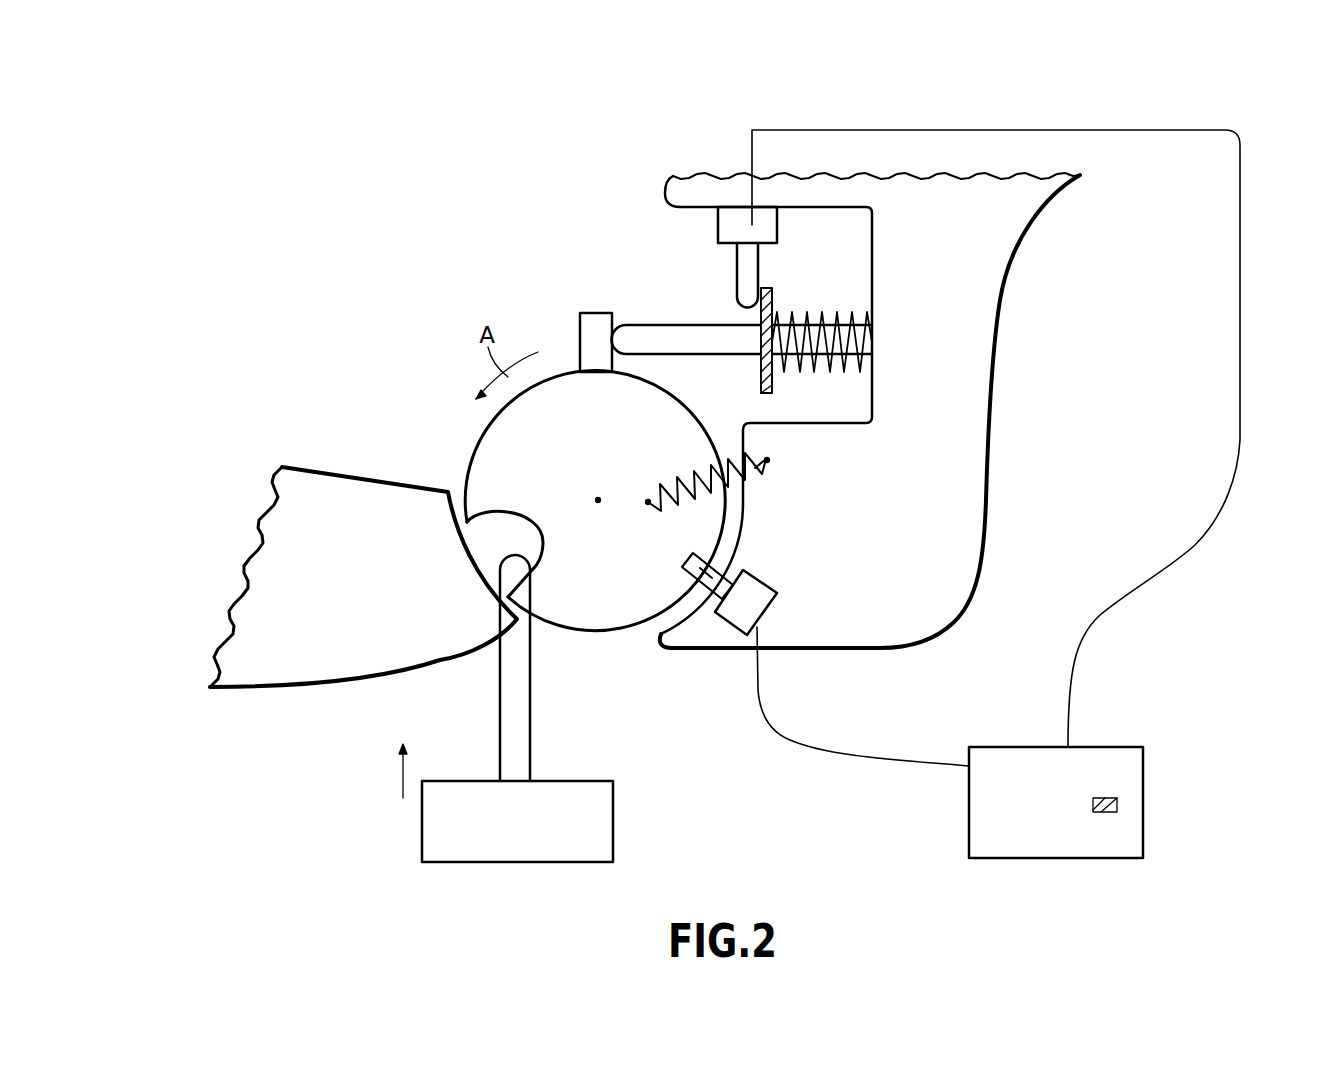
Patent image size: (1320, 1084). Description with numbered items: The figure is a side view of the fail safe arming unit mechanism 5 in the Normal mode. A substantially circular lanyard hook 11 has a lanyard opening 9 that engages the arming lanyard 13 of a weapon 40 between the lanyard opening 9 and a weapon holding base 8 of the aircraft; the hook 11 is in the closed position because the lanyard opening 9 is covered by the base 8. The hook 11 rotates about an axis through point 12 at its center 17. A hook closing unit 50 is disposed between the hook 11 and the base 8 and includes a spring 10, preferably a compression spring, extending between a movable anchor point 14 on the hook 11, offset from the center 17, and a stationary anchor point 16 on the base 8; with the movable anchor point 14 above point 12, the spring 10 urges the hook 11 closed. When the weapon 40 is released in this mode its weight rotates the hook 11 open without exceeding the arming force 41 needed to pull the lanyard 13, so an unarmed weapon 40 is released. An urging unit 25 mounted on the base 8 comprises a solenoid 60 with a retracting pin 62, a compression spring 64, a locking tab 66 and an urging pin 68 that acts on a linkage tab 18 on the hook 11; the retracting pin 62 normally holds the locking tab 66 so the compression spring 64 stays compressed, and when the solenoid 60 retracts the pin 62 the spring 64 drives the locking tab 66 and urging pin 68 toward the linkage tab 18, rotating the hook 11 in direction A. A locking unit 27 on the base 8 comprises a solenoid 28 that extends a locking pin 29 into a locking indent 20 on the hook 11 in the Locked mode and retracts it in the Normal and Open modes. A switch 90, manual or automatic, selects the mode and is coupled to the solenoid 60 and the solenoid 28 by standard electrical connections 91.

The arming unit mechanism 5 is at (430, 352).
The weapon holding base 8 is at (285, 688).
The lanyard opening 9 is at (503, 533).
The spring 10 is at (683, 478).
The lanyard hook 11 is at (477, 447).
The point of axis of rotation 12 is at (598, 500).
The arming lanyard 13 is at (532, 725).
The movable anchor point 14 is at (648, 502).
The stationary anchor point 16 is at (768, 460).
The center of the hook 17 is at (598, 499).
The linkage tab 18 is at (594, 313).
The locking indent 20 is at (687, 582).
The urging unit 25 is at (891, 258).
The locking unit 27 is at (845, 549).
The solenoid 28 is at (760, 580).
The locking pin 29 is at (725, 577).
The weapon 40 is at (613, 822).
The arming force 41 is at (403, 780).
The hook closing unit 50 is at (772, 478).
The solenoid 60 is at (718, 227).
The retracting pin 62 is at (737, 265).
The compression spring 64 is at (807, 323).
The locking tab 66 is at (773, 295).
The urging pin 68 is at (723, 358).
The switch 90 is at (1132, 747).
The electrical connections 91 is at (1153, 130).